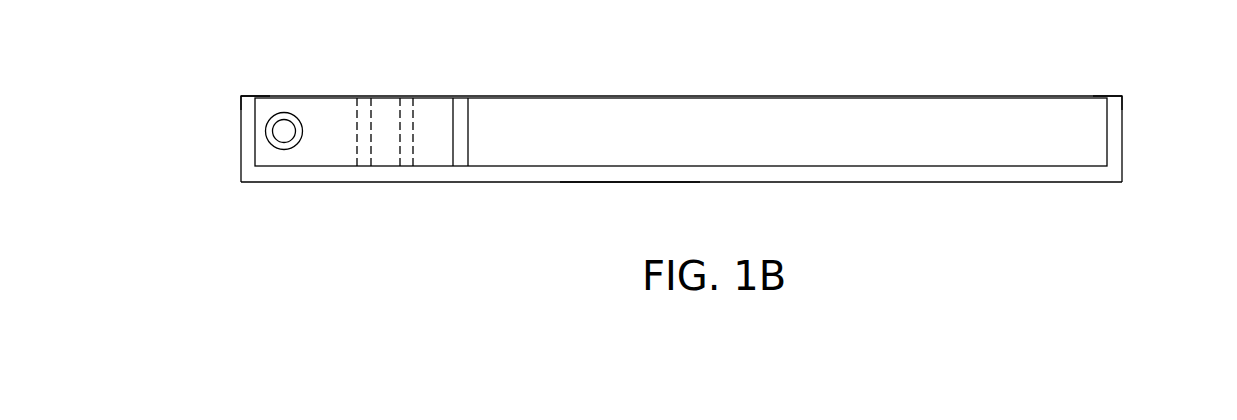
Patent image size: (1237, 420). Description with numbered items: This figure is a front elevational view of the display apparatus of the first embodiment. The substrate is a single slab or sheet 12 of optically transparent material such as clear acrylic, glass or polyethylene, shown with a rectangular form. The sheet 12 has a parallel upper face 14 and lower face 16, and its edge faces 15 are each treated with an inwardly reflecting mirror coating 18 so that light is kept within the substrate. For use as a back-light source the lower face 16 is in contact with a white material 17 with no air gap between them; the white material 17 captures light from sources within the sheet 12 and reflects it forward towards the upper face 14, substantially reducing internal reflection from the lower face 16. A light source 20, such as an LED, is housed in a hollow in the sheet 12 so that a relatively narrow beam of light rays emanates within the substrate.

The sheet 12 is at (688, 148).
The upper face 14 is at (892, 96).
The edge faces 15 is at (248, 95).
The lower face 16 is at (891, 182).
The white material 17 is at (630, 182).
The mirror coating 18 is at (241, 125).
The light source 20 is at (300, 138).